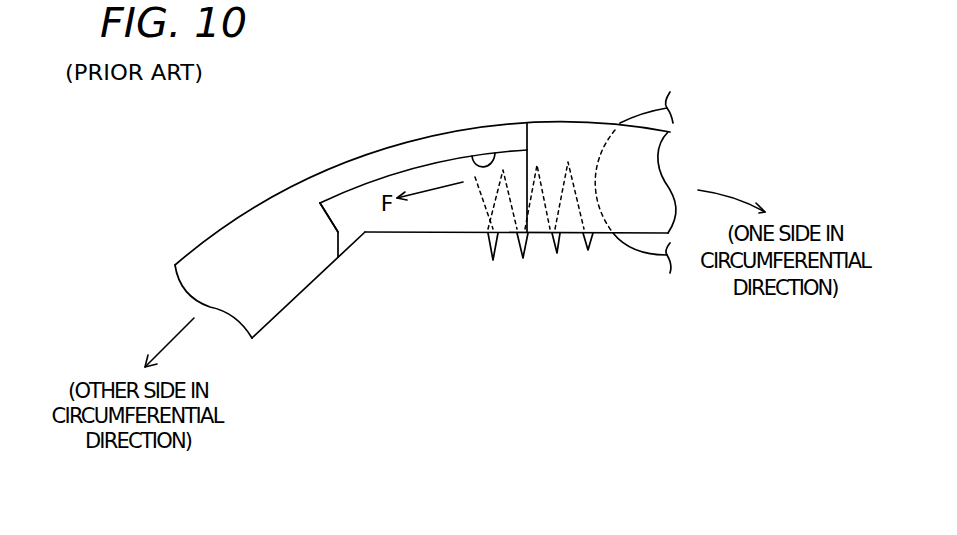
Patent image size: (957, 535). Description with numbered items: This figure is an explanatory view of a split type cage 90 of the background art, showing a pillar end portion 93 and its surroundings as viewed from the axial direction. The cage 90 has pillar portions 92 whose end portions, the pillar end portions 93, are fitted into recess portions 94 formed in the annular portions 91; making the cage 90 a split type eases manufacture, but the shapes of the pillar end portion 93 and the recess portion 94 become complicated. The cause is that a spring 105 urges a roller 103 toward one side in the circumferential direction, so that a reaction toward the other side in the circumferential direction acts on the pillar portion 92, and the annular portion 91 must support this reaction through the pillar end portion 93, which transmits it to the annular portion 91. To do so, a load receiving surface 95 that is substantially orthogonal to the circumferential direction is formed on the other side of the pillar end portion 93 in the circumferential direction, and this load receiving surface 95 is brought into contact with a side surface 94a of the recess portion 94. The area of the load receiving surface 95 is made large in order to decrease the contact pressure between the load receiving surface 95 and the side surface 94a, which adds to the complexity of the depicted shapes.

The cage 90 is at (580, 98).
The annular portion 91 is at (218, 263).
The pillar portion 92 is at (398, 232).
The pillar end portion 93 is at (435, 218).
The recess portion 94 is at (493, 160).
The side surface 94a is at (333, 220).
The load receiving surface 95 is at (333, 241).
The roller 103 is at (632, 253).
The spring 105 is at (556, 248).